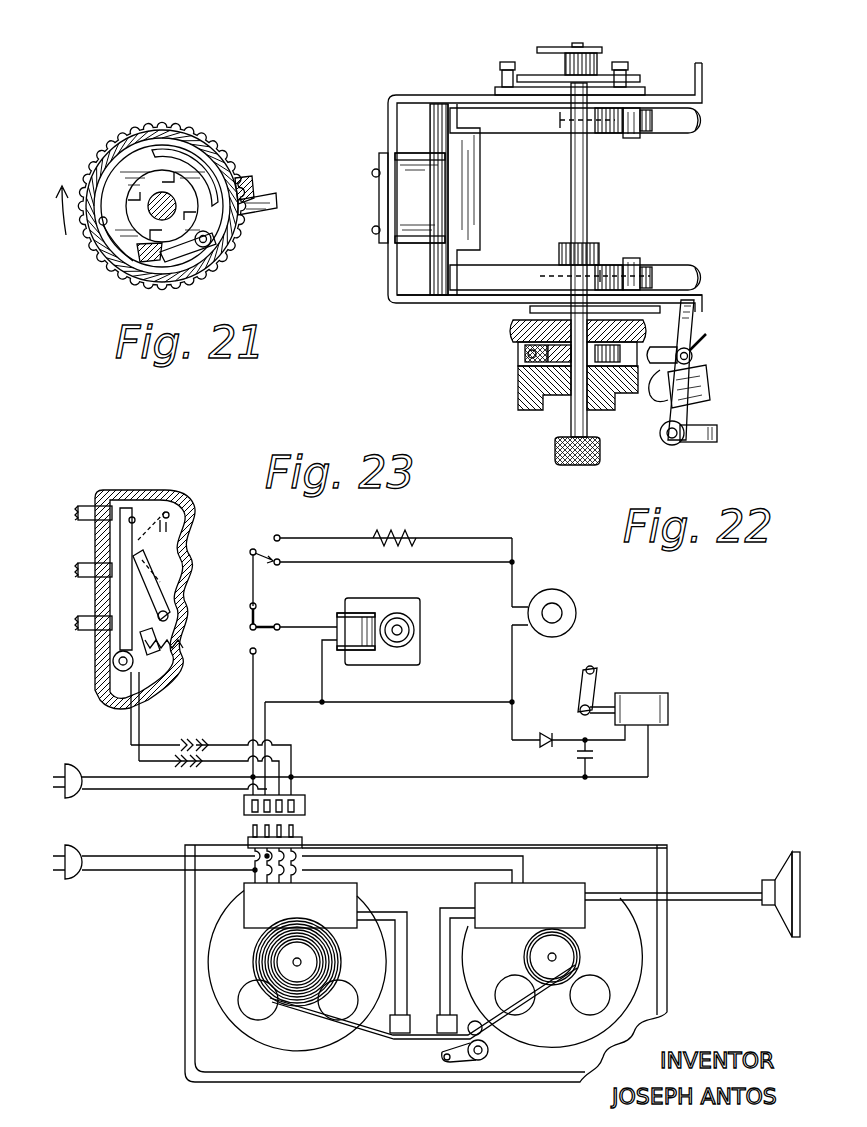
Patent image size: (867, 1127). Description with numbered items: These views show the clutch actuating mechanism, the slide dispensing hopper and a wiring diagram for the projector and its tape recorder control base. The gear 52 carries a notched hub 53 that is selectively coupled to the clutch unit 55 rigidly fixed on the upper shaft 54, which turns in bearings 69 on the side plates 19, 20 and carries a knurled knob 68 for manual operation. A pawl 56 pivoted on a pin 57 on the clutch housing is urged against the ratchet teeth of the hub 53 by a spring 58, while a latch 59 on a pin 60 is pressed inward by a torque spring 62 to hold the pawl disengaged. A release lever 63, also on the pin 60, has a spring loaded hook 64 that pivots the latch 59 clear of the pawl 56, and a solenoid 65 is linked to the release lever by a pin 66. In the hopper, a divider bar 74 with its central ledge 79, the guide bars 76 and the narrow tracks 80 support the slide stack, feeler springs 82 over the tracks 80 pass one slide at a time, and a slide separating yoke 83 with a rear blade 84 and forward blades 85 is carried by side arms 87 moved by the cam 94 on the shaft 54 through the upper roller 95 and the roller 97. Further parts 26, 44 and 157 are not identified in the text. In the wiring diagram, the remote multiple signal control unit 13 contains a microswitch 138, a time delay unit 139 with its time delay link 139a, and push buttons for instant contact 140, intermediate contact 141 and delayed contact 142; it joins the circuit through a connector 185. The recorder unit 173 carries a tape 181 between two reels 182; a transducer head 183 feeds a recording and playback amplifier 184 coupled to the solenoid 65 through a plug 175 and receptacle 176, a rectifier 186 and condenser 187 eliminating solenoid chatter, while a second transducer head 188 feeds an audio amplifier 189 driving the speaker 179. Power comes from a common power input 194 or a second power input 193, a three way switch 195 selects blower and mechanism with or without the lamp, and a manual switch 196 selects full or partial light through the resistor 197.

In FIG. 23, the remote multiple signal control unit 13 is at (130, 488).
In FIG. 22, the side plate 19 is at (702, 298).
In FIG. 22, the side plate 20 is at (702, 80).
In FIG. 23, the motor 26 is at (578, 604).
In FIG. 23, the solenoid 44 is at (420, 611).
In FIG. 21, the gear 52 is at (92, 150).
In FIG. 22, the gear 52 is at (516, 336).
In FIG. 21, the notched hub 53 is at (137, 180).
In FIG. 22, the notched hub 53 is at (532, 364).
In FIG. 21, the upper shaft 54 is at (167, 190).
In FIG. 22, the upper shaft 54 is at (590, 185).
In FIG. 21, the clutch unit 55 is at (206, 138).
In FIG. 22, the clutch unit 55 is at (518, 400).
In FIG. 21, the pawl 56 is at (240, 222).
In FIG. 21, the pin 57 is at (227, 253).
In FIG. 21, the spring 58 is at (117, 262).
In FIG. 22, the spring 58 is at (520, 353).
In FIG. 21, the latch 59 is at (263, 195).
In FIG. 22, the latch 59 is at (660, 346).
In FIG. 22, the pin 60 is at (692, 356).
In FIG. 22, the torque spring 62 is at (706, 334).
In FIG. 22, the release lever 63 is at (706, 400).
In FIG. 23, the release lever 63 is at (592, 672).
In FIG. 22, the spring loaded hook 64 is at (658, 394).
In FIG. 22, the solenoid 65 is at (712, 442).
In FIG. 23, the solenoid 65 is at (636, 692).
In FIG. 22, the pin 66 is at (670, 444).
In FIG. 22, the knurled knob 68 is at (556, 455).
In FIG. 22, the bearings 69 is at (560, 120).
In FIG. 22, the divider bar 74 is at (430, 136).
In FIG. 22, the guide bars 76 is at (648, 267).
In FIG. 22, the ledge 79 is at (482, 185).
In FIG. 22, the tracks 80 is at (497, 250).
In FIG. 22, the feeler springs 82 is at (688, 270).
In FIG. 22, the slide separating yoke 83 is at (387, 276).
In FIG. 22, the rear blade 84 is at (420, 208).
In FIG. 22, the forward blades 85 is at (631, 256).
In FIG. 22, the side arms 87 is at (501, 90).
In FIG. 22, the cam 94 is at (530, 62).
In FIG. 22, the upper roller 95 is at (628, 72).
In FIG. 22, the roller 97 is at (504, 67).
In FIG. 22, the pulley 157 is at (598, 52).
In FIG. 23, the microswitch 138 is at (178, 634).
In FIG. 23, the time delay unit 139 is at (165, 562).
In FIG. 23, the time delay link 139a is at (160, 510).
In FIG. 23, the instant contact push button 140 is at (76, 506).
In FIG. 23, the intermediate contact push button 141 is at (74, 568).
In FIG. 23, the delayed contact push button 142 is at (76, 622).
In FIG. 23, the recorder unit 173 is at (185, 955).
In FIG. 23, the plug 175 is at (305, 806).
In FIG. 23, the receptacle 176 is at (306, 840).
In FIG. 23, the speaker 179 is at (778, 864).
In FIG. 23, the tape 181 is at (378, 1030).
In FIG. 23, the reels 182 is at (212, 990).
In FIG. 23, the transducer head 183 is at (403, 1033).
In FIG. 23, the recording and playback amplifier 184 is at (357, 893).
In FIG. 23, the connector 185 is at (191, 735).
In FIG. 23, the rectifier 186 is at (550, 735).
In FIG. 23, the condenser 187 is at (598, 758).
In FIG. 23, the second transducer head 188 is at (448, 1033).
In FIG. 23, the audio amplifier 189 is at (565, 883).
In FIG. 23, the second power input 193 is at (88, 750).
In FIG. 23, the common power input 194 is at (82, 878).
In FIG. 23, the three way switch 195 is at (266, 626).
In FIG. 23, the manual switch 196 is at (256, 545).
In FIG. 23, the resistor 197 is at (403, 530).